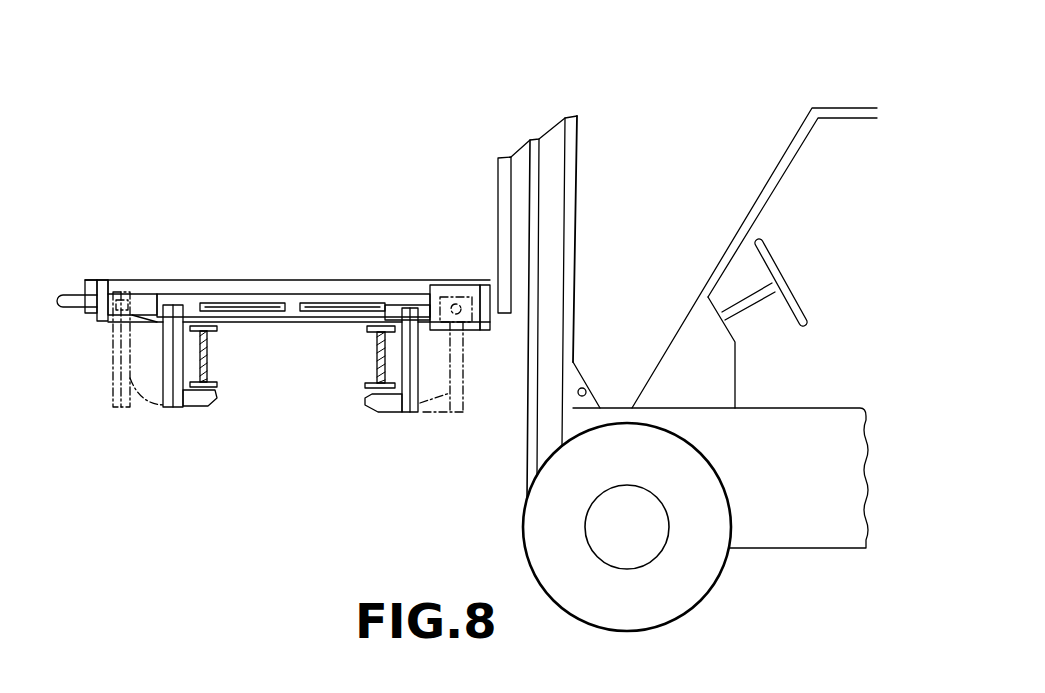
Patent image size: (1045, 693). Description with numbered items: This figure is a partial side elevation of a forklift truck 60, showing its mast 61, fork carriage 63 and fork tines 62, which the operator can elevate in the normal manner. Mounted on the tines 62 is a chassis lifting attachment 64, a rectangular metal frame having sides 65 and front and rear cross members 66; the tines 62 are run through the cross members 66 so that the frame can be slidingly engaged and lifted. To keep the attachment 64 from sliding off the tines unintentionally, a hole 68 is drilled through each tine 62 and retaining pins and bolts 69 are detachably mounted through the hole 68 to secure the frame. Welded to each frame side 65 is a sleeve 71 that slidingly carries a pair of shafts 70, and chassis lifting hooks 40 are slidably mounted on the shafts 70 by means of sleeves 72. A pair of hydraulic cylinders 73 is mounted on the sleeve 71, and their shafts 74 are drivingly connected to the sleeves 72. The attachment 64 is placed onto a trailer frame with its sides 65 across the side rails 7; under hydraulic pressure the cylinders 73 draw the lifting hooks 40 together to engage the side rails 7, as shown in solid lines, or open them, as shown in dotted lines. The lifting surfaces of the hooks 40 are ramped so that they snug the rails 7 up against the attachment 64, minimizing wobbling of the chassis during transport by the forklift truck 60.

The forklift truck 60 is at (741, 153).
The mast 61 is at (555, 186).
The fork carriage 63 is at (500, 180).
The chassis lifting attachment 64 is at (303, 225).
The sides 65 is at (352, 280).
The fork tines 62 is at (76, 291).
The hole 68 is at (80, 300).
The retaining pins and bolts 69 is at (92, 282).
The shafts 70 is at (145, 297).
The sleeve 71 is at (295, 292).
The hydraulic cylinders 73 is at (238, 302).
The shafts 74 is at (393, 307).
The sleeves 72 is at (422, 295).
The front and rear cross members 66 is at (100, 327).
The side rails 7 is at (210, 353).
The lifting hooks 40 is at (392, 420).